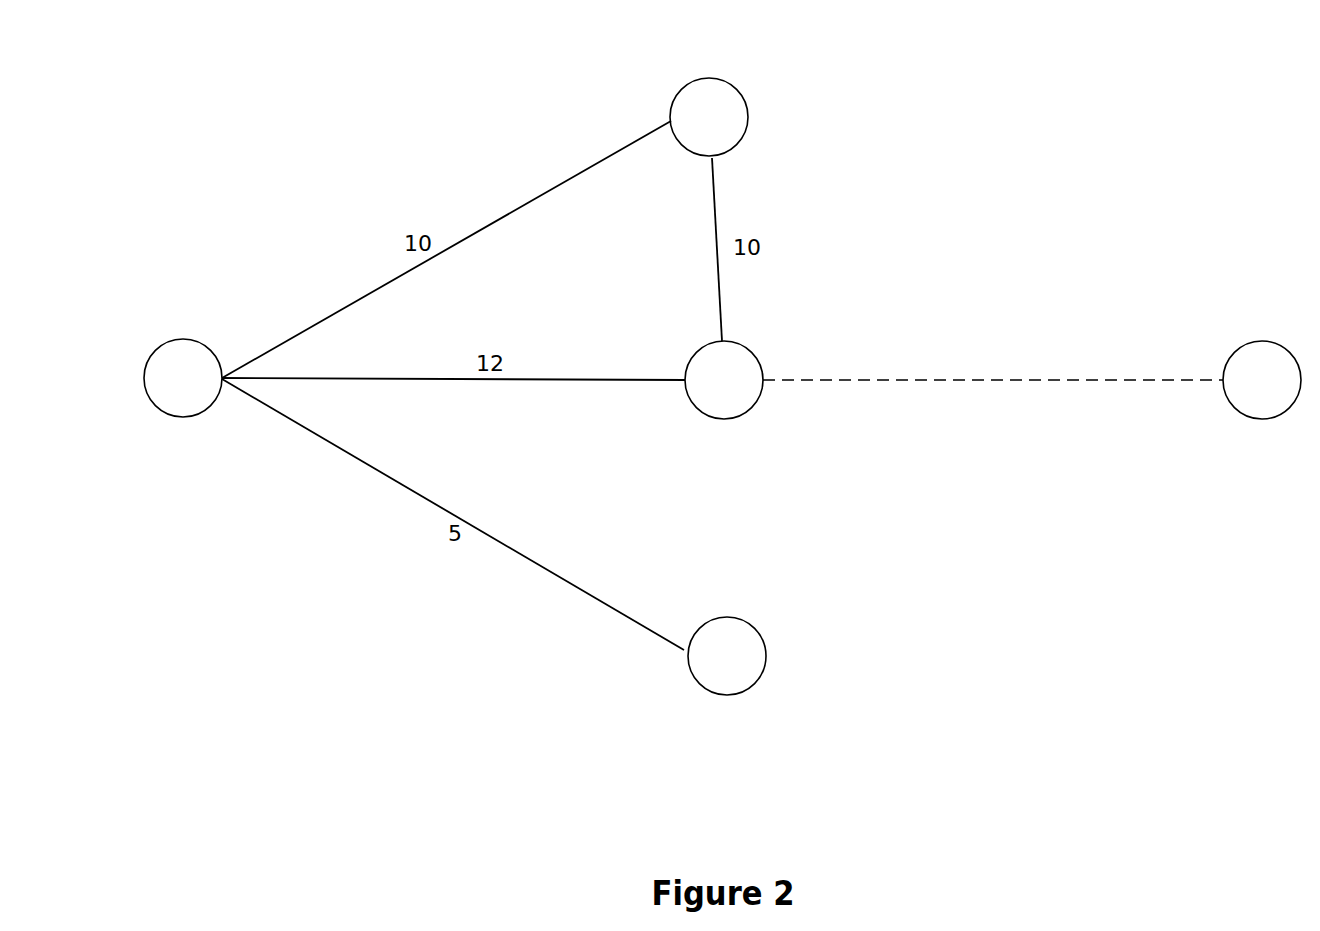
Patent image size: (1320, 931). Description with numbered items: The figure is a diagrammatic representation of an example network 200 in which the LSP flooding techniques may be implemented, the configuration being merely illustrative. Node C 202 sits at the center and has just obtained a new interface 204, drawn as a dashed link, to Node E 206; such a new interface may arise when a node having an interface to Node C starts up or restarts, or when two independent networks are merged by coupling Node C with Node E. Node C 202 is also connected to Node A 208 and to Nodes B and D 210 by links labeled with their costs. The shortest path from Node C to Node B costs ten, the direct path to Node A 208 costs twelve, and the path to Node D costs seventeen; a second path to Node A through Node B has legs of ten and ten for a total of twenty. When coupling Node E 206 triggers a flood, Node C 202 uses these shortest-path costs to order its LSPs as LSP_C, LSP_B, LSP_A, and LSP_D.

The network 200 is at (286, 66).
The Node C 202 is at (720, 422).
The new interface 204 is at (962, 383).
The Node E 206 is at (1253, 420).
The Node A 208 is at (180, 422).
The Nodes B and D 210 is at (678, 145).